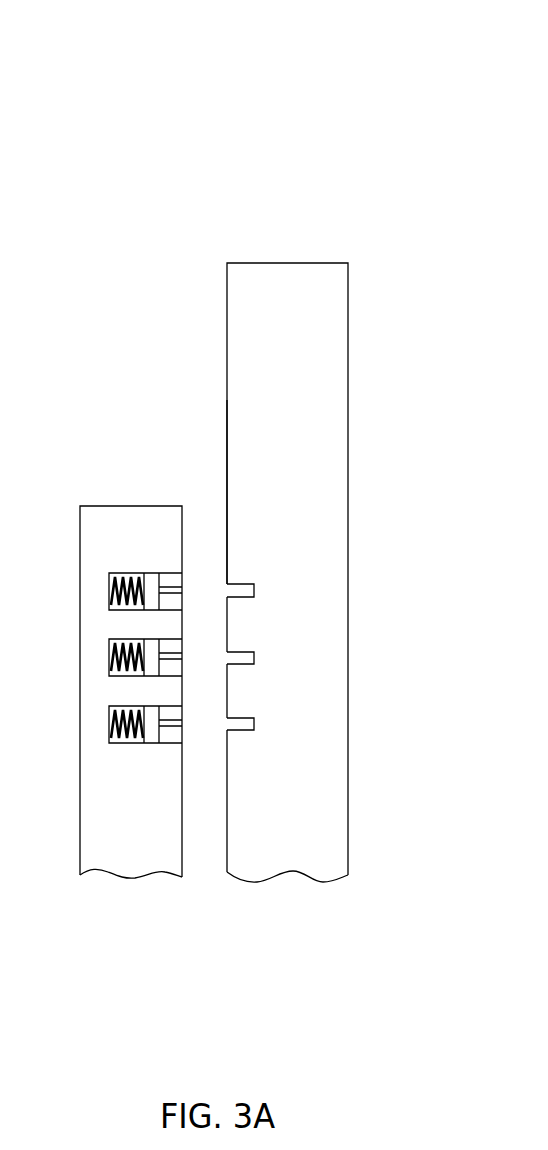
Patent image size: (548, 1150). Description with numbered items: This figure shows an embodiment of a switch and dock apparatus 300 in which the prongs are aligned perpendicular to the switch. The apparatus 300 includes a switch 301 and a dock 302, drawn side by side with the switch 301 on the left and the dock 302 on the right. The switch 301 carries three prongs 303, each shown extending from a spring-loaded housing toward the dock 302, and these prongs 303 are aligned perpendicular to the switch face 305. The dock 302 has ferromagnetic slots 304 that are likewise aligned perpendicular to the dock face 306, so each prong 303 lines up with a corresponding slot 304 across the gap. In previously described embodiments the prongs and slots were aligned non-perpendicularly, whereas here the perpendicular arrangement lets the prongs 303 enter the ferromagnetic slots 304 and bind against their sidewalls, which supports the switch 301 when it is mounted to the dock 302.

The apparatus 300 is at (114, 71).
The switch 301 is at (157, 849).
The dock 302 is at (314, 849).
The prongs 303 is at (175, 588).
The ferromagnetic slots 304 is at (255, 591).
The switch face 305 is at (182, 773).
The dock face 306 is at (228, 518).